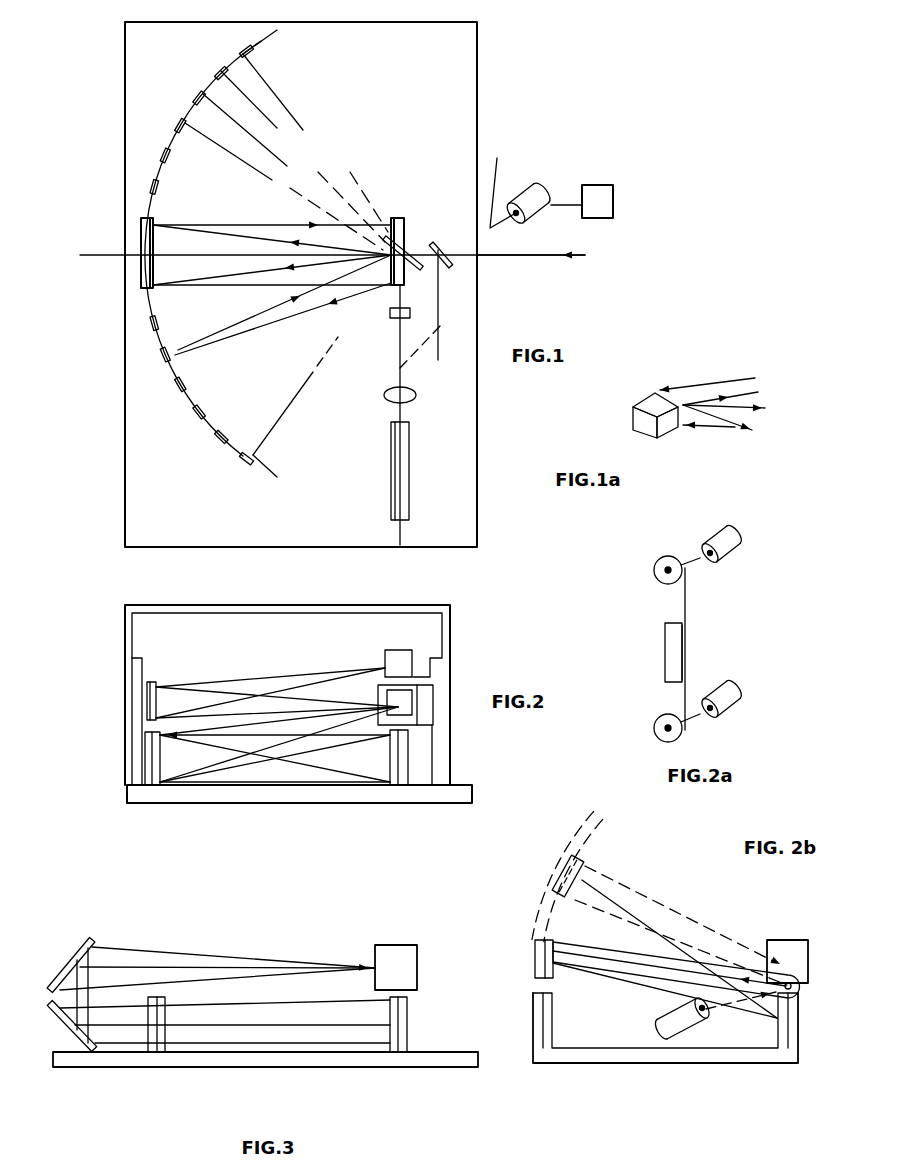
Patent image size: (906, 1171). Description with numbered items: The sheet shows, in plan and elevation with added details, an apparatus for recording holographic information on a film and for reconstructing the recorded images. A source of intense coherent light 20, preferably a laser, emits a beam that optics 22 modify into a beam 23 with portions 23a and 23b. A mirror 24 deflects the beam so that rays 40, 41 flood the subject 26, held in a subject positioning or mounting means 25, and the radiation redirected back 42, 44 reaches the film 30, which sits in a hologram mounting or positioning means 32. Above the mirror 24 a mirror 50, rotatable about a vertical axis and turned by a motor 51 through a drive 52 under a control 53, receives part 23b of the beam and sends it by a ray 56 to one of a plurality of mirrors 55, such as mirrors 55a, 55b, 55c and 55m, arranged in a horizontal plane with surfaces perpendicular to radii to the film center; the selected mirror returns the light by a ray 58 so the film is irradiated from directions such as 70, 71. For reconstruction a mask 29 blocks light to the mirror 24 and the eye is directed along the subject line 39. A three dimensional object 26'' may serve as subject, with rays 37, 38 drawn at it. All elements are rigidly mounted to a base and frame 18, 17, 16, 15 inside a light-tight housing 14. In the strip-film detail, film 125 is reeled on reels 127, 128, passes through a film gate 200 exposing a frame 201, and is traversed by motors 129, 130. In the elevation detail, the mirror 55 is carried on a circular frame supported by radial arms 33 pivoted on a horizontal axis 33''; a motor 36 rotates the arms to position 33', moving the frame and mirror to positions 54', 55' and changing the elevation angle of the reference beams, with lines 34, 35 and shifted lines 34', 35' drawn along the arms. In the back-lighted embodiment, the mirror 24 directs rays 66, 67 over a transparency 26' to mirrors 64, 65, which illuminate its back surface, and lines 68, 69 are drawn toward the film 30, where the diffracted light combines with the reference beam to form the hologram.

In FIG. 2, the housing 14 is at (294, 603).
In FIG. 2, the frame 15 is at (420, 668).
In FIG. 2, the frame 16 is at (451, 752).
In FIG. 2, the frame 17 is at (130, 677).
In FIG. 1, the base 18 is at (325, 524).
In FIG. 2, the base 18 is at (127, 795).
In FIG. 3, the base 18 is at (445, 1051).
In FIG. 1, the source of intense coherent light 20 is at (409, 464).
In FIG. 1, the optics 22 is at (416, 394).
In FIG. 1, the beam 23 is at (403, 412).
In FIG. 1, the beam portion 23a is at (383, 355).
In FIG. 1, the beam portion 23b is at (438, 300).
In FIG. 1, the mirror 24 is at (399, 233).
In FIG. 2, the mirror 24 is at (378, 683).
In FIG. 2b, the mirror 24 is at (774, 940).
In FIG. 3, the mirror 24 is at (417, 953).
In FIG. 1, the subject positioning or mounting means 25 is at (141, 262).
In FIG. 2, the subject positioning or mounting means 25 is at (145, 759).
In FIG. 3, the subject positioning or mounting means 25 is at (148, 1035).
In FIG. 1, the subject 26 is at (170, 253).
In FIG. 2, the subject 26 is at (174, 758).
In FIG. 2b, the subject 26 is at (566, 1020).
In FIG. 3, the back lighted transparency 26' is at (186, 1053).
In FIG. 1a, the three dimensional object 26'' is at (655, 441).
In FIG. 1, the mask 29 is at (390, 316).
In FIG. 2, the mask 29 is at (387, 700).
In FIG. 1, the film 30 is at (391, 280).
In FIG. 1a, the film 30 is at (687, 388).
In FIG. 2, the film 30 is at (390, 752).
In FIG. 2b, the film 30 is at (778, 1028).
In FIG. 3, the film 30 is at (390, 1020).
In FIG. 1, the hologram mounting or positioning means 32 is at (405, 284).
In FIG. 1a, the hologram mounting or positioning means 32 is at (708, 428).
In FIG. 2, the hologram mounting or positioning means 32 is at (410, 770).
In FIG. 3, the hologram mounting or positioning means 32 is at (407, 1005).
In FIG. 2b, the radial arms 33 is at (676, 957).
In FIG. 2b, the arm position 33' is at (683, 903).
In FIG. 2b, the horizontal axis 33'' is at (816, 997).
In FIG. 2b, the light beam 34 is at (669, 981).
In FIG. 2b, the light beam in rotated position 34' is at (681, 924).
In FIG. 2b, the light beam 35 is at (665, 990).
In FIG. 2b, the light beam in rotated position 35' is at (679, 949).
In FIG. 2b, the motor 36 is at (665, 1018).
In FIG. 1a, the reflected beam 37 is at (713, 394).
In FIG. 1a, the reflected beam 38 is at (737, 428).
In FIG. 1, the subject line 39 is at (577, 258).
In FIG. 1, the ray 40 is at (218, 233).
In FIG. 1, the ray 41 is at (223, 278).
In FIG. 1, the redirected radiation 42 is at (243, 226).
In FIG. 1, the redirected radiation 44 is at (260, 284).
In FIG. 1, the rotatable mirror 50 is at (441, 247).
In FIG. 2, the rotatable mirror 50 is at (397, 650).
In FIG. 2b, the rotatable mirror 50 is at (795, 940).
In FIG. 1, the motor 51 is at (542, 182).
In FIG. 1, the drive 52 is at (502, 178).
In FIG. 1, the control 53 is at (605, 185).
In FIG. 2b, the frame position 54' is at (554, 855).
In FIG. 2, the mirror 55 is at (113, 701).
In FIG. 2b, the mirror 55 is at (562, 942).
In FIG. 2b, the mirror position 55' is at (614, 853).
In FIG. 1, the mirror 55a is at (262, 46).
In FIG. 1, the mirror 55b is at (217, 66).
In FIG. 1, the mirror 55c is at (199, 95).
In FIG. 1, the mirror 55m is at (249, 463).
In FIG. 1, the ray 56 is at (300, 313).
In FIG. 1, the ray 58 is at (247, 322).
In FIG. 3, the mirror 64 is at (72, 955).
In FIG. 3, the mirror 65 is at (62, 1024).
In FIG. 3, the ray 66 is at (178, 953).
In FIG. 3, the ray 67 is at (213, 977).
In FIG. 3, the light beam 68 is at (263, 1000).
In FIG. 3, the light beam 69 is at (257, 1044).
In FIG. 1, the reference beam direction 70 is at (277, 91).
In FIG. 1, the reference beam direction 71 is at (300, 111).
In FIG. 2a, the film 125 is at (686, 599).
In FIG. 2a, the reel 127 is at (654, 569).
In FIG. 2a, the reel 128 is at (654, 731).
In FIG. 2a, the motor 129 is at (740, 541).
In FIG. 2a, the motor 130 is at (736, 690).
In FIG. 2a, the film gate 200 is at (665, 646).
In FIG. 2a, the film frame 201 is at (686, 656).